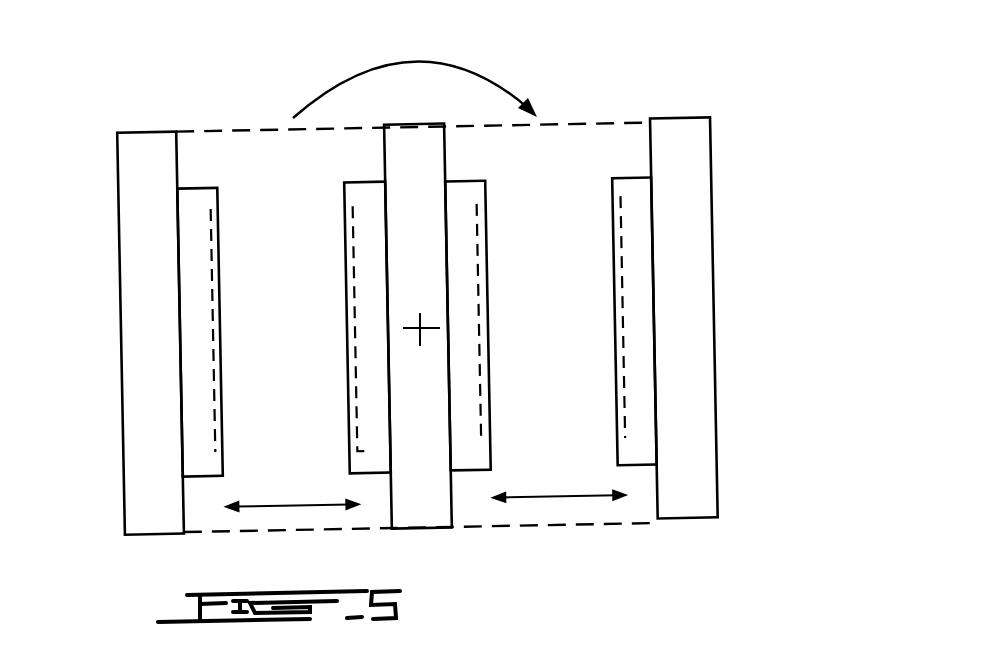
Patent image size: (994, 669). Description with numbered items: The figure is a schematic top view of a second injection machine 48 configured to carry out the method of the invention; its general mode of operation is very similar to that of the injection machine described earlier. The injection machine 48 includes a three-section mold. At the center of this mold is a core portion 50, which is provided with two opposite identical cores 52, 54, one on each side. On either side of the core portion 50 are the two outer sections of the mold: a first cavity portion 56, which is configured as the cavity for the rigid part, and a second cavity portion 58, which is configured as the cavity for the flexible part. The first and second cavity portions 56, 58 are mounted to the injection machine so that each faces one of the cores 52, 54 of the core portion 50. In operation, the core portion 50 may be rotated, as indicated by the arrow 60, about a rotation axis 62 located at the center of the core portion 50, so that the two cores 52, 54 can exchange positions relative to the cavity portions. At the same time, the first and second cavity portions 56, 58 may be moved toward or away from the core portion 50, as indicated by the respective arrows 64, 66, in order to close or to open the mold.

The second injection machine 48 is at (812, 40).
The core portion 50 is at (392, 492).
The core 52 is at (347, 233).
The core 54 is at (488, 247).
The first cavity portion 56 is at (178, 153).
The second cavity portion 58 is at (649, 146).
The arrow 60 is at (437, 64).
The rotation axis 62 is at (420, 328).
The arrow 64 is at (303, 505).
The arrow 66 is at (552, 498).